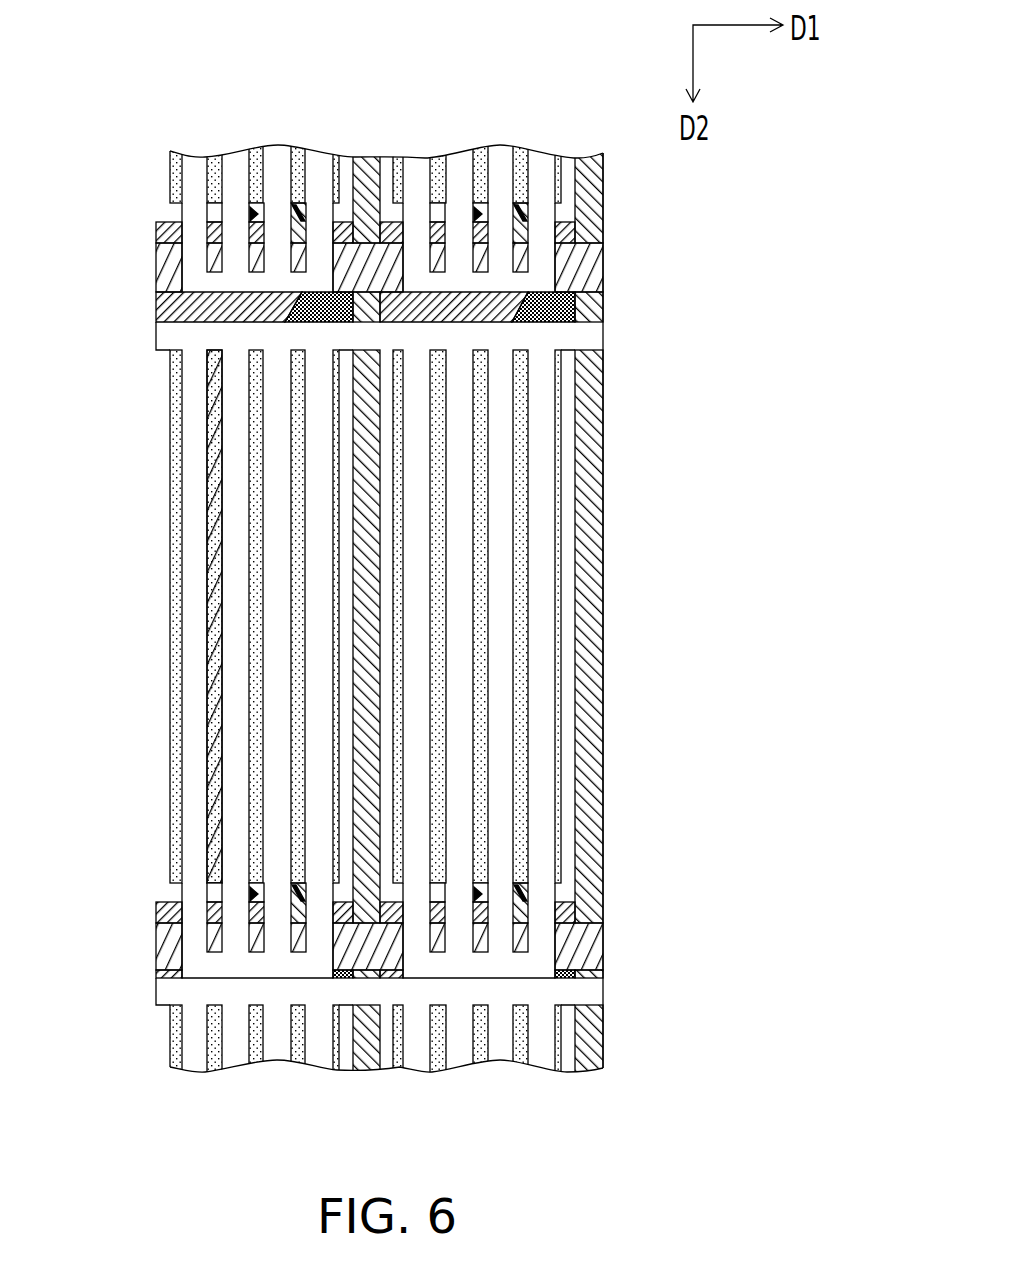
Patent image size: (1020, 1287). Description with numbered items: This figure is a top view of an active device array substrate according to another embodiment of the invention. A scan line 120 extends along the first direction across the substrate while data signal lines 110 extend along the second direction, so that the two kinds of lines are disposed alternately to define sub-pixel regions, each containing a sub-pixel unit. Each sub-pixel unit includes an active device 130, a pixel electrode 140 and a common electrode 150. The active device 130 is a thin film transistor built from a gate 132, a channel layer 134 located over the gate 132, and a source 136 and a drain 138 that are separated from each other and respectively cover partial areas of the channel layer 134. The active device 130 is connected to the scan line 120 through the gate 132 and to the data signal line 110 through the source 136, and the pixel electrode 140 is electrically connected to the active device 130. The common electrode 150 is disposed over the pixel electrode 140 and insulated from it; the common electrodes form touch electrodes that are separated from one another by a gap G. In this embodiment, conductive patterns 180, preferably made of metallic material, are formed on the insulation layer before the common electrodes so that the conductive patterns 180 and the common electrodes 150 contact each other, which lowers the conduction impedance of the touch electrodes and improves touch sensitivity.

The data signal line 110 is at (590, 593).
The scan line 120 is at (165, 232).
The active device 130 is at (724, 183).
The gate 132 is at (576, 232).
The channel layer 134 is at (574, 290).
The source 136 is at (566, 303).
The drain 138 is at (527, 222).
The pixel electrode 140 is at (558, 688).
The common electrode 150 is at (542, 627).
The conductive pattern 180 is at (165, 268).
The gap G is at (172, 338).